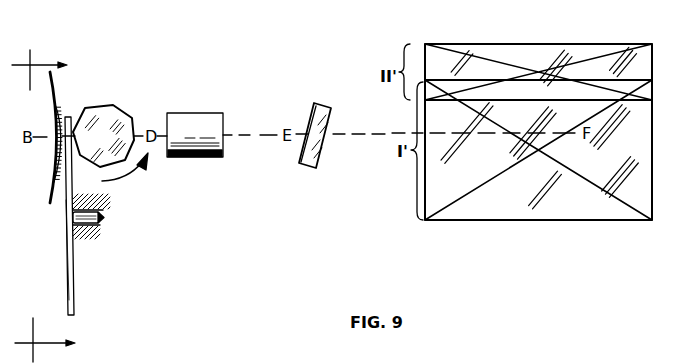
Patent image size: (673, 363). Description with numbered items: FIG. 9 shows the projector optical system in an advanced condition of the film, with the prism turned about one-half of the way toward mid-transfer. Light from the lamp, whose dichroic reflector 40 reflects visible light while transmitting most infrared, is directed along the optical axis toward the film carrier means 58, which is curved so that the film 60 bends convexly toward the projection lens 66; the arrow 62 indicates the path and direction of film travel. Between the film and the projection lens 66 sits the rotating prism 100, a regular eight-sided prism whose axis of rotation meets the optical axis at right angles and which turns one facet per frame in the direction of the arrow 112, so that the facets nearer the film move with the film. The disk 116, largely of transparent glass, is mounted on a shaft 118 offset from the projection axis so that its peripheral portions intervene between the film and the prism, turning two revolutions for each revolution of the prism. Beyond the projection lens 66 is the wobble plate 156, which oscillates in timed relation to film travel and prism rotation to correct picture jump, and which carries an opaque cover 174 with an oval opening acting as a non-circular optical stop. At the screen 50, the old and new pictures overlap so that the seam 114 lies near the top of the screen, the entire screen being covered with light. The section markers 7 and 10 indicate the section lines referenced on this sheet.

The section line 7 is at (20, 7).
The section line 10- 10 is at (39, 205).
The reflector 40 is at (8, 214).
The screen 50 is at (438, 43).
The film carrier means 58 is at (51, 162).
The film 60 is at (68, 117).
The arrow 62 is at (48, 133).
The projection lens 66 is at (212, 113).
The rotating prism 100 is at (113, 107).
The arrow 112 is at (127, 177).
The seam 114 is at (506, 97).
The disk 116 is at (75, 268).
The shaft 118 is at (104, 222).
The wobble plate 156 is at (320, 104).
The opaque cover 174 is at (306, 108).